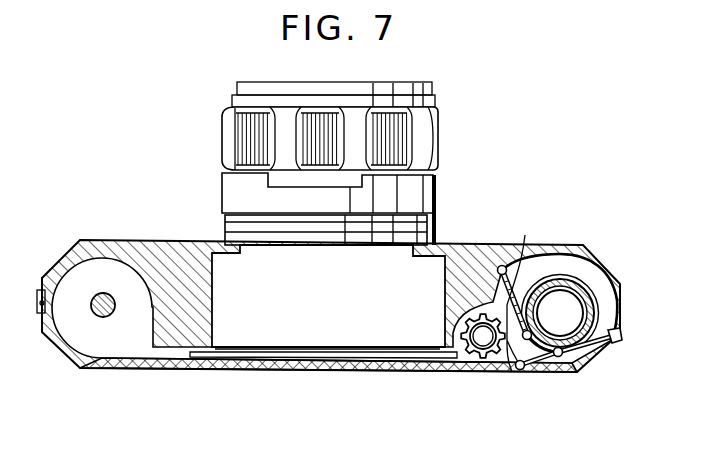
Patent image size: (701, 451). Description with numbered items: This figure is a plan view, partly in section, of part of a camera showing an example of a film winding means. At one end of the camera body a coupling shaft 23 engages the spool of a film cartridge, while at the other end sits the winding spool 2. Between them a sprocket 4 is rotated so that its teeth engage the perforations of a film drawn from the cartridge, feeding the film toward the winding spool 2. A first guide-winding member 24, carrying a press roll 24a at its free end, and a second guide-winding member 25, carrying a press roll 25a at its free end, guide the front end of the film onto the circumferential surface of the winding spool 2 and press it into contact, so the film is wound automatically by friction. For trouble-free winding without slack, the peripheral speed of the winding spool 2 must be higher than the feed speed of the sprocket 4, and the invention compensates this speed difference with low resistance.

The winding spool 2 is at (590, 341).
The sprocket 4 is at (474, 366).
The coupling shaft 23 is at (105, 293).
The first guide-winding member 24 is at (556, 357).
The press roll 24a is at (575, 369).
The second guide-winding member 25 is at (522, 292).
The press roll 25a is at (517, 370).